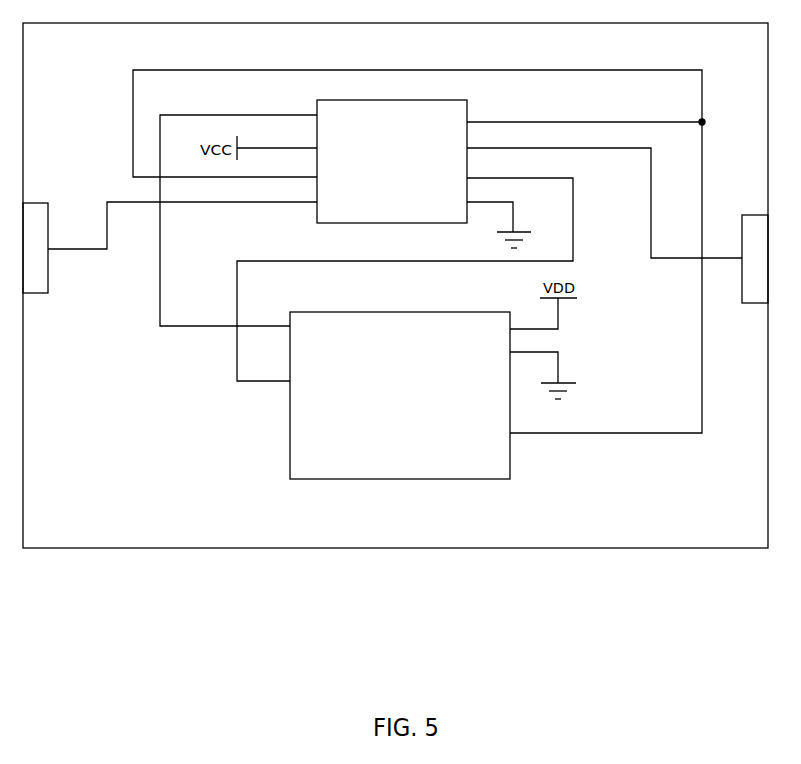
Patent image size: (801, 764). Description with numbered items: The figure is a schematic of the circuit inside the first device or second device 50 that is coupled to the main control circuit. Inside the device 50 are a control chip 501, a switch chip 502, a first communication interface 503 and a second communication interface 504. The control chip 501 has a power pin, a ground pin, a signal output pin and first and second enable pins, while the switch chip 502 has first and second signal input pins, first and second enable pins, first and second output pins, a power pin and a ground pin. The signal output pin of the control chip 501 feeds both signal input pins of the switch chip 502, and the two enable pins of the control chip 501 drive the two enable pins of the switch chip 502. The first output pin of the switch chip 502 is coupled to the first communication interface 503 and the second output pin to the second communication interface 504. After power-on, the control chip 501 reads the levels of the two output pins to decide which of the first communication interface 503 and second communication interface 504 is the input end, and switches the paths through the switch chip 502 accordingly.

The first device or second device 50 is at (70, 67).
The control chip 501 is at (387, 311).
The switch chip 502 is at (467, 103).
The first communication interface 503 is at (753, 237).
The second communication interface 504 is at (30, 215).